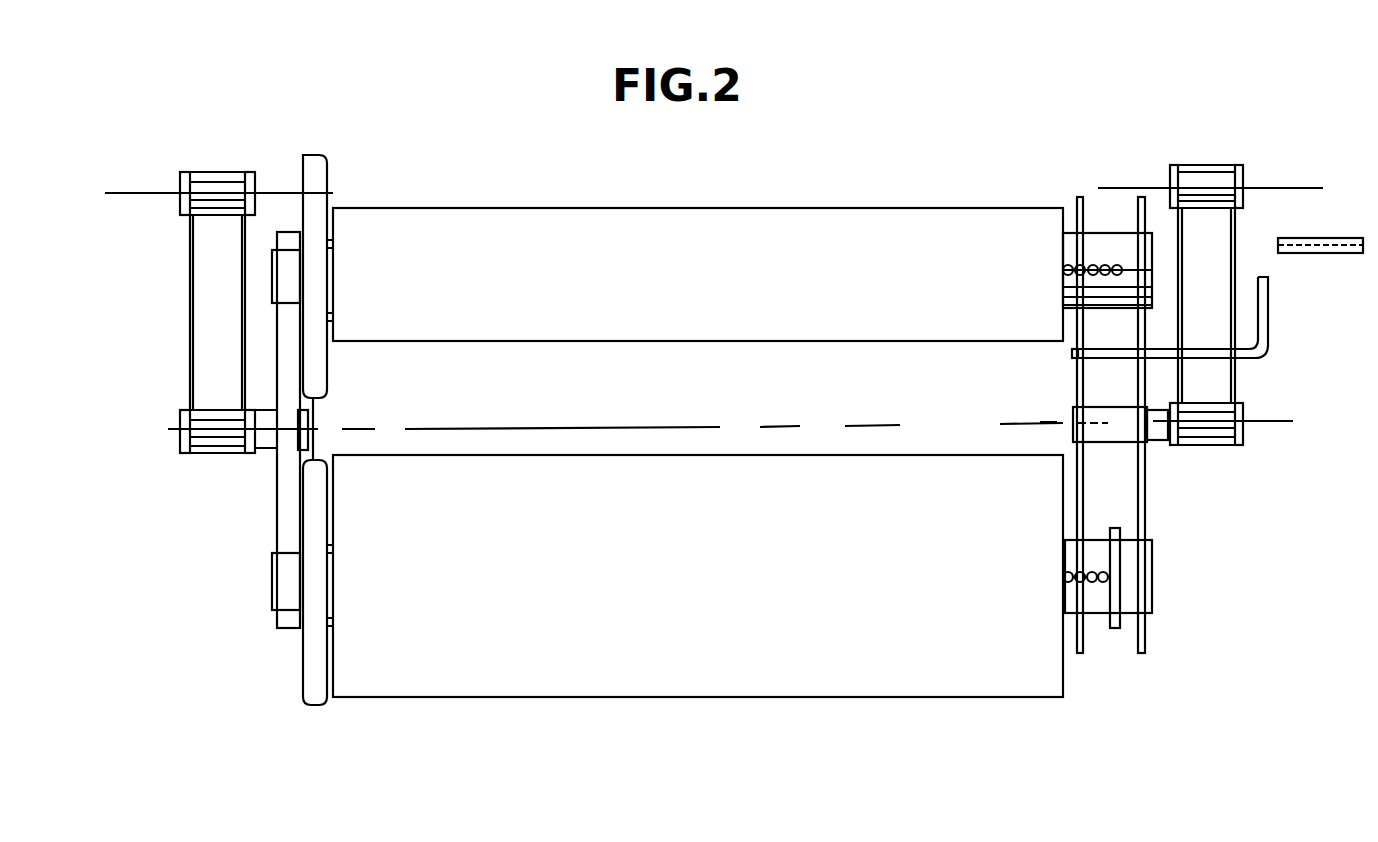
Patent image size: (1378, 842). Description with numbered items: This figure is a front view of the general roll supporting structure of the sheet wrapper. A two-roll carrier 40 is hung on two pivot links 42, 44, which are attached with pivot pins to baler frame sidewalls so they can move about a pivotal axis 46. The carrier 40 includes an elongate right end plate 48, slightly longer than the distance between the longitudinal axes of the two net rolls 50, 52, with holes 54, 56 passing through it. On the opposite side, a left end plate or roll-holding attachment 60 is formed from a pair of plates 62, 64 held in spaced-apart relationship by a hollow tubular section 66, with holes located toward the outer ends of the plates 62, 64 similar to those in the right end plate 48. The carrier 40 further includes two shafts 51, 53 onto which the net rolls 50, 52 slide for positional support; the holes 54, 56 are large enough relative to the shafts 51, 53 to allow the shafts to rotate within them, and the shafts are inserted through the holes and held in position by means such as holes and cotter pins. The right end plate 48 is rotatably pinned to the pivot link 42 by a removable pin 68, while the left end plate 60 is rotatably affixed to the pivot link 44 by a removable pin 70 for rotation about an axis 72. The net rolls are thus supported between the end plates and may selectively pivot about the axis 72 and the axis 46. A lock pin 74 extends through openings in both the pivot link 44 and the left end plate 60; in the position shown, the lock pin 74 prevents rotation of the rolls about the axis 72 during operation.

The two-roll carrier 40 is at (860, 144).
The pivot link 42 is at (182, 318).
The pivot link 44 is at (1245, 230).
The pivotal axis 46 is at (300, 192).
The right end plate 48 is at (290, 490).
The net roll 50 is at (547, 225).
The shaft 51 is at (1110, 242).
The net roll 52 is at (565, 480).
The shaft 53 is at (1100, 600).
The hole 54 is at (283, 612).
The hole 56 is at (288, 236).
The left end plate 60 is at (1170, 505).
The plate 62 is at (1083, 468).
The plate 64 is at (1148, 518).
The hollow tubular section 66 is at (730, 397).
The removable pin 68 is at (314, 428).
The removable pin 70 is at (1157, 437).
The axis 72 is at (1270, 422).
The lock pin 74 is at (1268, 322).